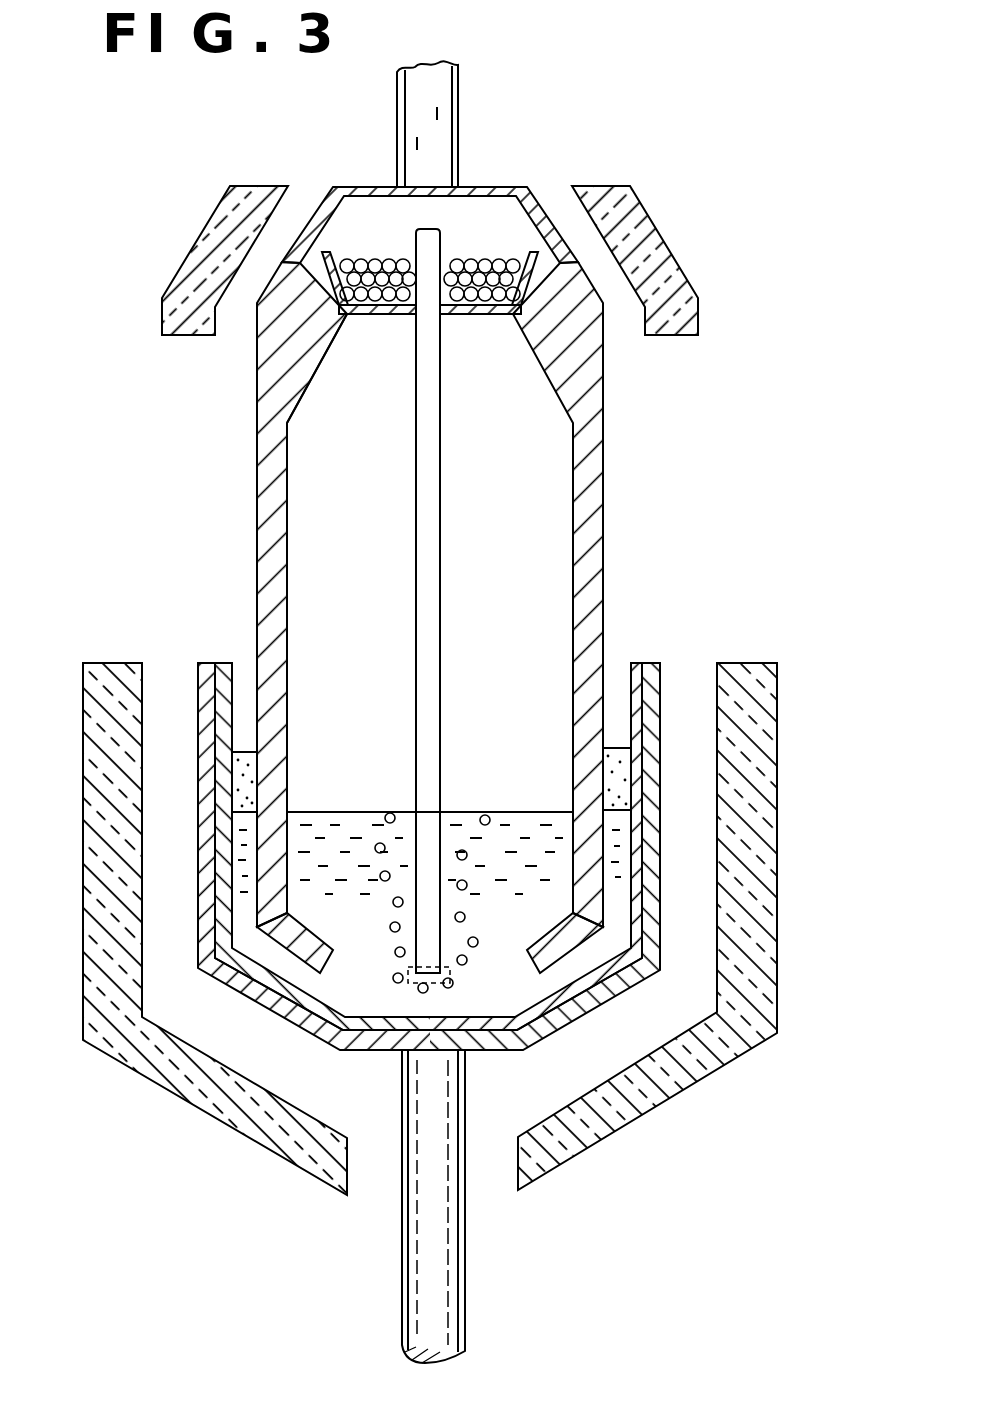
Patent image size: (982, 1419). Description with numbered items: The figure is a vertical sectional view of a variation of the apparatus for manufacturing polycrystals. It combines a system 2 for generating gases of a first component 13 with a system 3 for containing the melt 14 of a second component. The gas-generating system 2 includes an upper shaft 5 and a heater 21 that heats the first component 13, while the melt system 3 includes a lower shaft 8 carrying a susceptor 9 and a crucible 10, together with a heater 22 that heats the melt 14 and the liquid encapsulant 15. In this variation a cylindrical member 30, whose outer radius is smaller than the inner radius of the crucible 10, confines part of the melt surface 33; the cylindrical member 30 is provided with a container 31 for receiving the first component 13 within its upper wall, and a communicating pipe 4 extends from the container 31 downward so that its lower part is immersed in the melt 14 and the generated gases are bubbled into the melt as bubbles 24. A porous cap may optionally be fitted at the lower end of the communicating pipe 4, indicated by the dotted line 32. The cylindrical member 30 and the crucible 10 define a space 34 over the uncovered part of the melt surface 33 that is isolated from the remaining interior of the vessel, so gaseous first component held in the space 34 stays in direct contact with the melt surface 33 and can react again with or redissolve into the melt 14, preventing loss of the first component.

The system for generating gases of a first component 2 is at (380, 160).
The system for containing melt of the second component 3 is at (709, 643).
The communicating pipe 4 is at (420, 500).
The upper shaft 5 is at (447, 112).
The lower shaft 8 is at (452, 1262).
The susceptor 9 is at (650, 664).
The crucible 10 is at (225, 663).
The first component 13 is at (352, 262).
The melt 14 is at (513, 972).
The liquid encapsulant 15 is at (245, 752).
The heater 21 is at (230, 187).
The heater 22 is at (108, 680).
The bubbles 24 is at (385, 882).
The cylindrical member 30 is at (258, 380).
The container for receiving a first component 31 is at (533, 256).
The porous cap (dotted line) 32 is at (410, 982).
The melt surface 33 is at (350, 804).
The space 34 is at (317, 436).